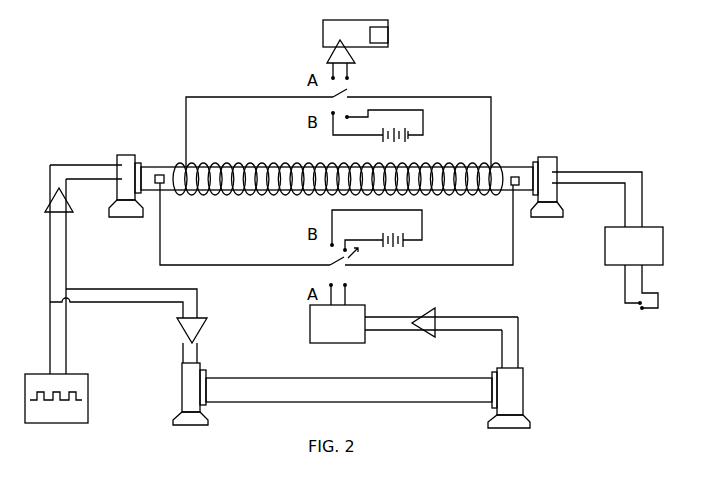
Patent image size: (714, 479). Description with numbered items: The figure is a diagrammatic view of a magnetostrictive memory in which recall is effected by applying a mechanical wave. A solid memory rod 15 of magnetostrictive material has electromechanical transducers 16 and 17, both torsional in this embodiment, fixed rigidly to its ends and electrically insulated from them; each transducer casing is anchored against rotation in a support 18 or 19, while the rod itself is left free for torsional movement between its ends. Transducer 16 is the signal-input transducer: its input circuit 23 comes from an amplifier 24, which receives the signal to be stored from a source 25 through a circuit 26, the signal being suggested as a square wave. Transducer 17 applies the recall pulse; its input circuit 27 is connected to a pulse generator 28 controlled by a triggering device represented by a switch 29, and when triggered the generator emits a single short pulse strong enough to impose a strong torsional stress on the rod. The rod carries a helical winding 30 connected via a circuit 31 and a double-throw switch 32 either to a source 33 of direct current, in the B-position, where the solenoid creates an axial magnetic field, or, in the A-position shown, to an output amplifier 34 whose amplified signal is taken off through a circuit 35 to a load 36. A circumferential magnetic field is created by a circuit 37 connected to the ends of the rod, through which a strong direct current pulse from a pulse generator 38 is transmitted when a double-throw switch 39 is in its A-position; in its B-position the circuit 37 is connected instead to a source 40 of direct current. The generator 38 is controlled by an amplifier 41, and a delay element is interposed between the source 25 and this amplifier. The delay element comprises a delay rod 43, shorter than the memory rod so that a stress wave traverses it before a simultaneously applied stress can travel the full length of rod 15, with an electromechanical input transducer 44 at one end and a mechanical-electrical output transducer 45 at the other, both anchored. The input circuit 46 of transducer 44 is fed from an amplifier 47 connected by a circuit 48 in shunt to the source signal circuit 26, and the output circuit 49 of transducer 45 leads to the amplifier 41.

The memory rod 15 is at (524, 166).
The signal-input transducer 16 is at (123, 160).
The recall transducer 17 is at (553, 158).
The support 18 is at (131, 216).
The support 19 is at (550, 214).
The input circuit 23 is at (58, 165).
The amplifier 24 is at (45, 201).
The signal source 25 is at (88, 384).
The source signal circuit 26 is at (50, 259).
The input circuit 27 is at (608, 172).
The pulse generator 28 is at (663, 238).
The switch 29 is at (628, 304).
The helical winding 30 is at (232, 164).
The circuit 31 is at (247, 97).
The double-throw switch 32 is at (350, 95).
The source of direct current 33 is at (410, 139).
The output amplifier 34 is at (350, 57).
The output circuit 35 is at (345, 20).
The load 36 is at (386, 27).
The circuit 37 is at (222, 265).
The pulse generator 38 is at (310, 330).
The double-throw switch 39 is at (356, 254).
The source of direct current 40 is at (399, 243).
The amplifier 41 is at (432, 314).
The delay rod 43 is at (352, 378).
The input transducer 44 is at (183, 377).
The output transducer 45 is at (523, 395).
The input circuit 46 is at (200, 343).
The amplifier 47 is at (205, 321).
The circuit 48 is at (98, 289).
The output circuit 49 is at (518, 346).